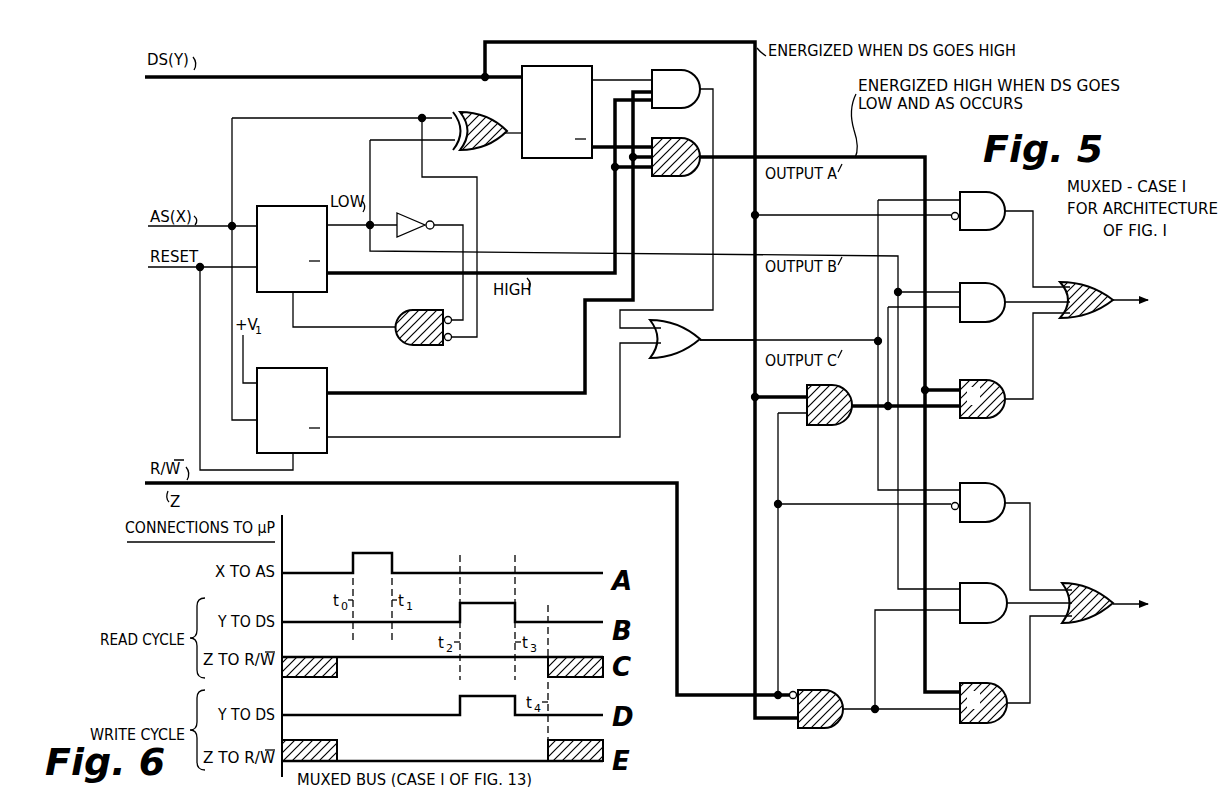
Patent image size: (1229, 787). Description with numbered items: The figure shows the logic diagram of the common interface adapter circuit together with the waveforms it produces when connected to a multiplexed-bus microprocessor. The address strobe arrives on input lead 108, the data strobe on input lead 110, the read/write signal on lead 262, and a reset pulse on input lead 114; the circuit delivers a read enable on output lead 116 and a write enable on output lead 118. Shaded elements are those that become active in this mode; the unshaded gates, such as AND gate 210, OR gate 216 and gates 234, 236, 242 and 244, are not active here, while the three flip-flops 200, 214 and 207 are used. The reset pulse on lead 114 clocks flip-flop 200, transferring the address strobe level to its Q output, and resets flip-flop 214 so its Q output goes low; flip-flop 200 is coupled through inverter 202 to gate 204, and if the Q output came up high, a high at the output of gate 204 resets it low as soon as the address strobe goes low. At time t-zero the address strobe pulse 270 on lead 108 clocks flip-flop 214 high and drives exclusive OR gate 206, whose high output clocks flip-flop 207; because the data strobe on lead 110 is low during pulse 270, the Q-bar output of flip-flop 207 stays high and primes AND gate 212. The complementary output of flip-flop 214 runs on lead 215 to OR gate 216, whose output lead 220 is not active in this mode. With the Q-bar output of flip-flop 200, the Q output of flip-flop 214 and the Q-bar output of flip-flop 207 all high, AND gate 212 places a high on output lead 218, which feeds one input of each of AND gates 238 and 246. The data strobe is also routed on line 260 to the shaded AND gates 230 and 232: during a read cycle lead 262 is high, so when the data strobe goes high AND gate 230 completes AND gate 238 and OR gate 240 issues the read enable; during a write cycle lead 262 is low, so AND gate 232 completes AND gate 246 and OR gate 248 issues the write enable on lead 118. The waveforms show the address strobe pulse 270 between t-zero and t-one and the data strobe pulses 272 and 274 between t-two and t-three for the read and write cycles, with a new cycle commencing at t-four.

In FIG. 5, the address strobe input lead 108 is at (148, 227).
In FIG. 5, the data strobe input lead 110 is at (226, 76).
In FIG. 5, the reset input lead 114 is at (148, 268).
In FIG. 5, the READ ENABLE output 116 is at (1122, 300).
In FIG. 5, the write enable output lead 118 is at (1120, 604).
In FIG. 5, the flip-flop 200 is at (291, 186).
In FIG. 5, the inverter 202 is at (417, 192).
In FIG. 5, the gate 204 is at (425, 345).
In FIG. 5, the exclusive OR gate 206 is at (478, 150).
In FIG. 5, the flip-flop 207 is at (557, 158).
In FIG. 5, the AND gate 210 is at (671, 108).
In FIG. 5, the AND gate 212 is at (671, 176).
In FIG. 5, the flip-flop 214 is at (296, 352).
In FIG. 5, the Q-bar output line of flip-flop 214 215 is at (520, 436).
In FIG. 5, the OR gate 216 is at (673, 358).
In FIG. 5, the output lead 218 is at (804, 142).
In FIG. 5, the output C line 220 is at (716, 324).
In FIG. 5, the AND gate 230 is at (820, 425).
In FIG. 5, the AND gate 232 is at (815, 728).
In FIG. 5, the NAND gate C 234 is at (975, 230).
In FIG. 5, the AND gate B 236 is at (976, 322).
In FIG. 5, the AND gate 238 is at (976, 418).
In FIG. 5, the OR gate 240 is at (1073, 318).
In FIG. 5, the NAND gate C 242 is at (975, 522).
In FIG. 5, the AND gate B 244 is at (979, 623).
In FIG. 5, the AND gate 246 is at (981, 723).
In FIG. 5, the OR gate 248 is at (1073, 623).
In FIG. 5, the DS line 260 is at (757, 128).
In FIG. 5, the read/write lead 262 is at (517, 480).
In FIG. 6, the address strobe pulse 270 is at (376, 553).
In FIG. 6, the data strobe pulse 272 is at (488, 603).
In FIG. 6, the data strobe pulse 274 is at (472, 696).